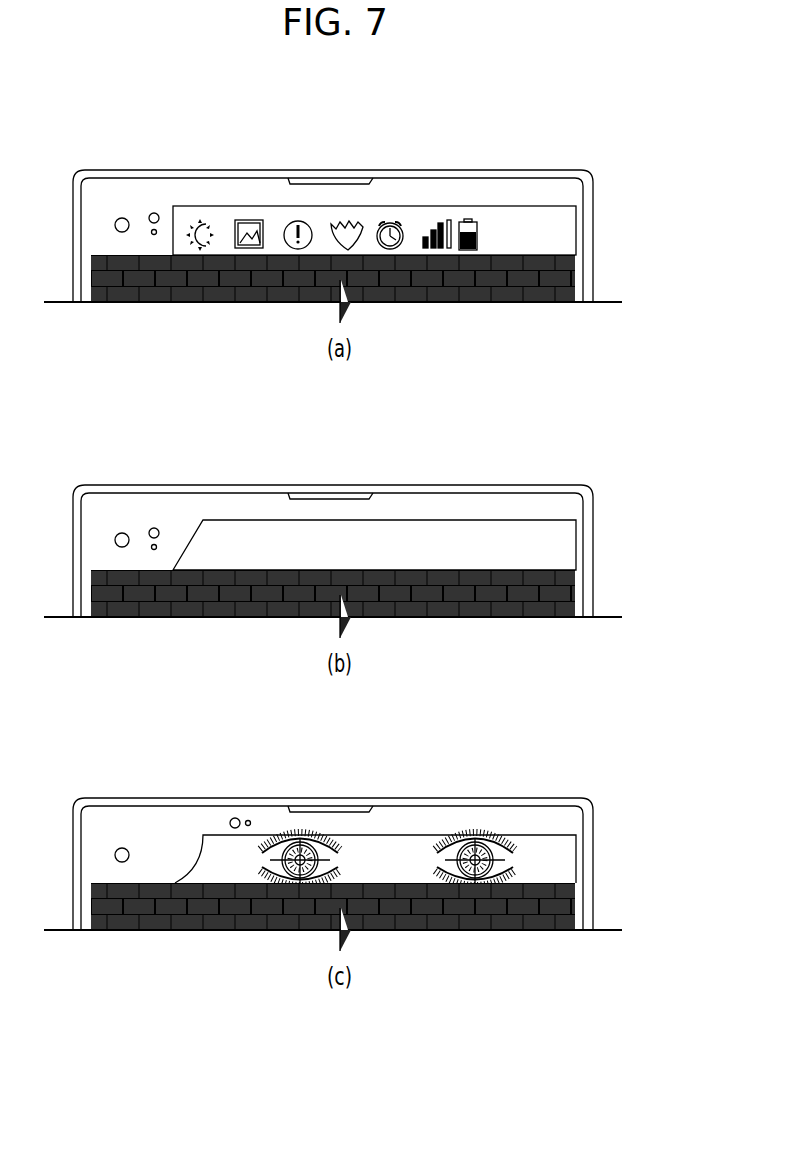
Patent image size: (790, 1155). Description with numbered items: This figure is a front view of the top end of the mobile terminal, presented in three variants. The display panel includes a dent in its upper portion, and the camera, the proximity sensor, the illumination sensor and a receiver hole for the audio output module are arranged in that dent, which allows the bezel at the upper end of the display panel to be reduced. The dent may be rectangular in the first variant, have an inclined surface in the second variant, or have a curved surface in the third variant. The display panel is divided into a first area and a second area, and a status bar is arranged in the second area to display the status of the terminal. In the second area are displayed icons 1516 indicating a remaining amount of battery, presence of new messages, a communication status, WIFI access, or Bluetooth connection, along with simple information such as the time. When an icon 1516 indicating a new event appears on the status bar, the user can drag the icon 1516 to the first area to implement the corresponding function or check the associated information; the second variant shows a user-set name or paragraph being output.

The icons 1516 is at (468, 217).